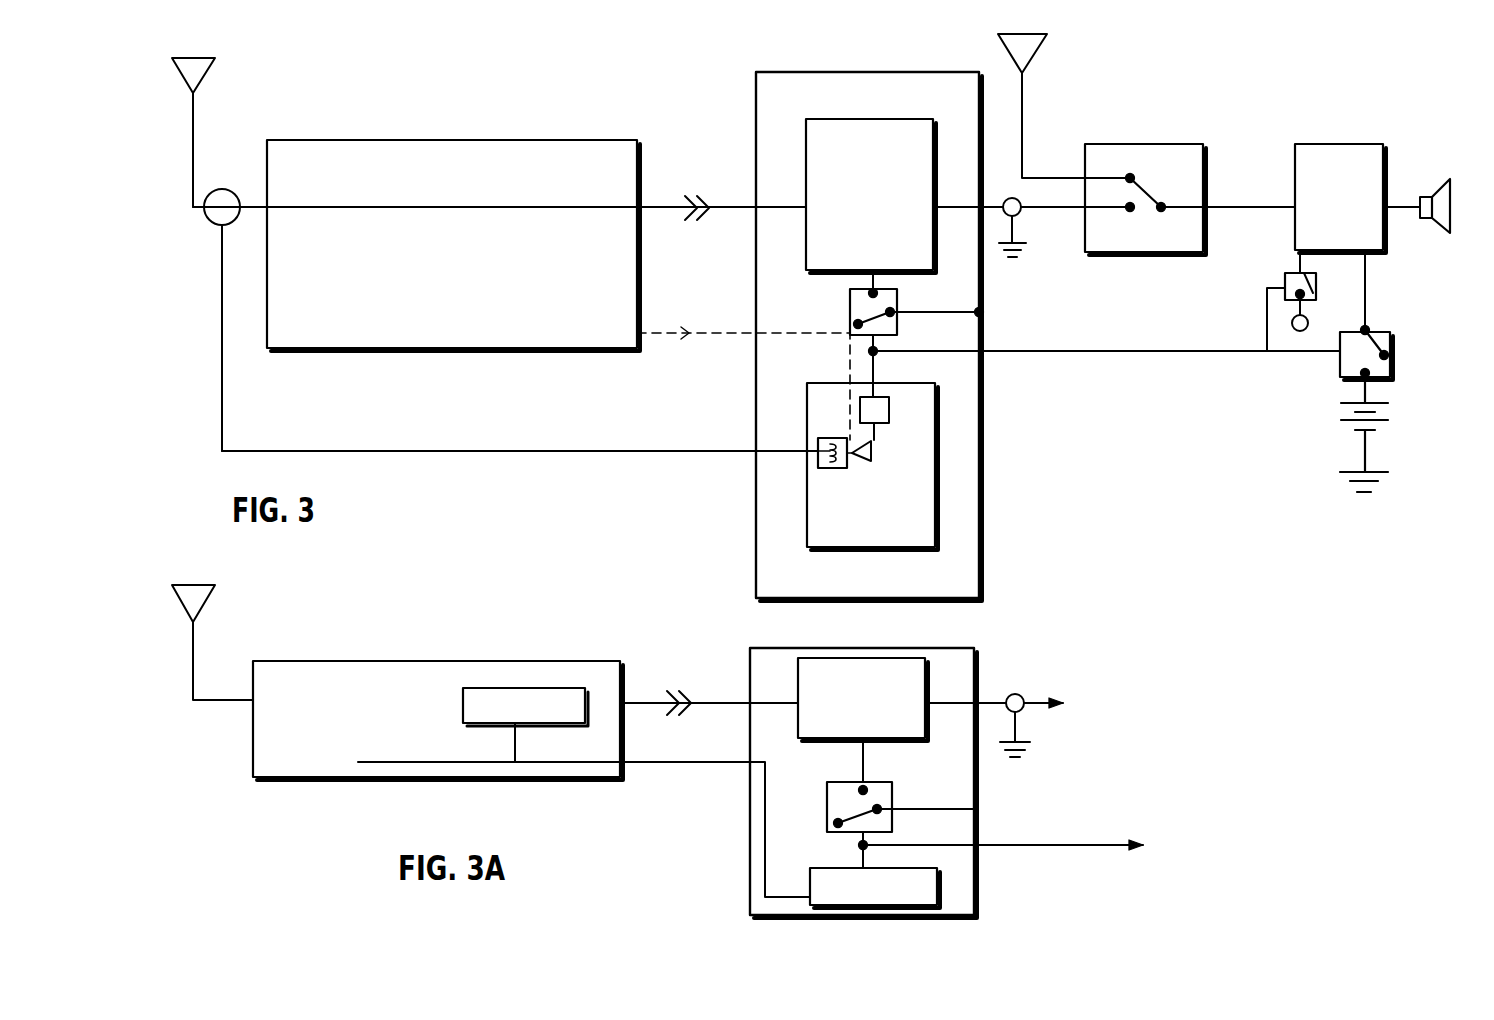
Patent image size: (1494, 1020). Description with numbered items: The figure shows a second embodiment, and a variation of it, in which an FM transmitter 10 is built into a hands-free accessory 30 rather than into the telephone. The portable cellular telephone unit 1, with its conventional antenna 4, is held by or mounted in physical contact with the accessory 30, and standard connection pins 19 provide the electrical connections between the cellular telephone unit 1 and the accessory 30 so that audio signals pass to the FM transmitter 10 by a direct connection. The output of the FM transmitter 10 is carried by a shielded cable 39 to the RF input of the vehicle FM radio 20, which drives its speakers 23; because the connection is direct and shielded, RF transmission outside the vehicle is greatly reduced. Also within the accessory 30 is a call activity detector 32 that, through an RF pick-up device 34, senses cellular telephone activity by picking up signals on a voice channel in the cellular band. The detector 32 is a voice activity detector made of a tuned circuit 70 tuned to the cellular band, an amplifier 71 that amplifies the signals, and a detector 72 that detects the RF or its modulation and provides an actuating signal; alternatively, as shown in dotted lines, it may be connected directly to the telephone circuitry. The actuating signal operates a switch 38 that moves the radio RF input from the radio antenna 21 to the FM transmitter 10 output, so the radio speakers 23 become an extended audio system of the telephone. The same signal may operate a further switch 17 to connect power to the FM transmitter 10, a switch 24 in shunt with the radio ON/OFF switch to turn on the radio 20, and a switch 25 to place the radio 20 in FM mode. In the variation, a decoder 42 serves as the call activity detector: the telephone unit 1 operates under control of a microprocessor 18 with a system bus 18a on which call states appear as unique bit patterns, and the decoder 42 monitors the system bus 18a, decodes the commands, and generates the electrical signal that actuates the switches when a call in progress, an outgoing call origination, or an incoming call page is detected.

In FIG. 3, the portable cellular telephone unit 1 is at (480, 140).
In FIG. 3A, the portable cellular telephone unit 1 is at (493, 660).
In FIG. 3, the antenna 4 is at (212, 58).
In FIG. 3A, the antenna 4 is at (212, 585).
In FIG. 3, the FM transmitter 10 is at (904, 120).
In FIG. 3A, the FM transmitter 10 is at (808, 692).
In FIG. 3, the switch 17 is at (897, 331).
In FIG. 3A, the microprocessor 18 is at (463, 718).
In FIG. 3A, the system bus 18a is at (472, 762).
In FIG. 3, the connection pins 19 is at (694, 228).
In FIG. 3A, the connection pins 19 is at (682, 720).
In FIG. 3, the FM radio 20 is at (1328, 143).
In FIG. 3, the antenna 21 is at (1032, 52).
In FIG. 3, the speakers 23 is at (1432, 196).
In FIG. 3, the switch 24 is at (1383, 332).
In FIG. 3, the switch 25 is at (1292, 283).
In FIG. 3A, the switch 25 is at (890, 805).
In FIG. 3, the hands-free accessory 30 is at (767, 140).
In FIG. 3A, the hands-free accessory 30 is at (973, 655).
In FIG. 3, the call activity detector 32 is at (925, 471).
In FIG. 3, the RF pick-up device 34 is at (218, 226).
In FIG. 3, the switch 38 is at (1148, 153).
In FIG. 3A, the shielded cable 39 is at (1038, 705).
In FIG. 3A, the decoder 42 is at (922, 903).
In FIG. 3, the tuned circuit 70 is at (818, 446).
In FIG. 3, the amplifier 71 is at (872, 447).
In FIG. 3, the detector 72 is at (889, 411).